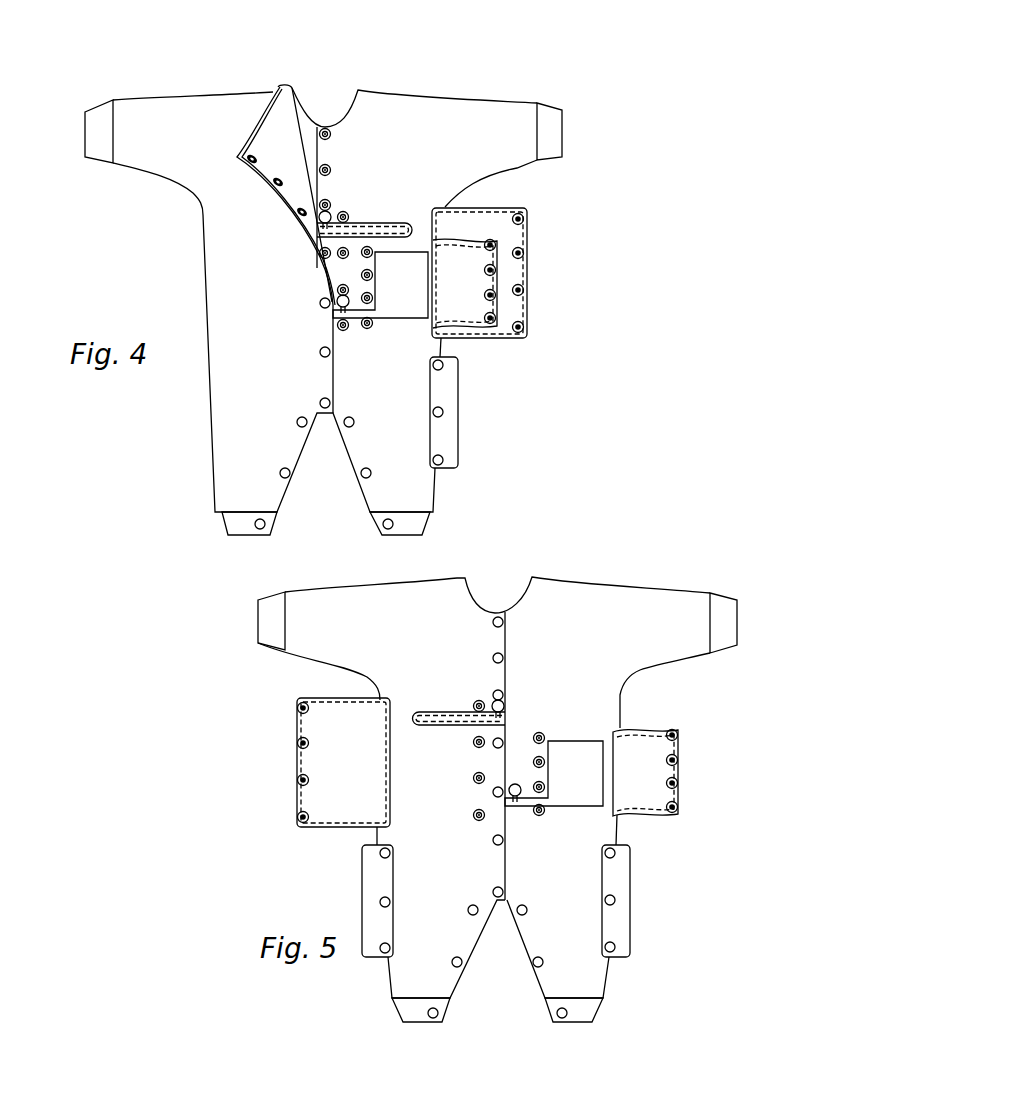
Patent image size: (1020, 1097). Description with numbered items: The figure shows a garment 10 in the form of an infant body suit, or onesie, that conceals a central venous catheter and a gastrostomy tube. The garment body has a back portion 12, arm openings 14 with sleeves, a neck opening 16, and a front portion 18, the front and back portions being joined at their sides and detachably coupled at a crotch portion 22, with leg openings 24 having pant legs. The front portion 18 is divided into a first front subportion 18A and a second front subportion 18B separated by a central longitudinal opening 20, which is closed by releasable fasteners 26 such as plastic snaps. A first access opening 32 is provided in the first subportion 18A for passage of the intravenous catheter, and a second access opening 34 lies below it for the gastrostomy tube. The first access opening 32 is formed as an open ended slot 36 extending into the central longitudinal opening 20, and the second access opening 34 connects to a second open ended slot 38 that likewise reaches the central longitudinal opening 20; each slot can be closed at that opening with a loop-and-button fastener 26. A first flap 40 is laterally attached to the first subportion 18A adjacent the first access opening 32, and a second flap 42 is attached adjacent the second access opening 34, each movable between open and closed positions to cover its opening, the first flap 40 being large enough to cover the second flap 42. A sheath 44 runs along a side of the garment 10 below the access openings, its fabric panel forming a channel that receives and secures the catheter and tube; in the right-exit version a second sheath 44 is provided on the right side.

In FIG. 4, the garment 10 is at (536, 52).
In FIG. 5, the garment 10 is at (712, 542).
In FIG. 4, the back portion 12 is at (293, 124).
In FIG. 4, the arm openings 14 is at (85, 127).
In FIG. 5, the arm openings 14 is at (258, 620).
In FIG. 5, the neck opening 16 is at (474, 594).
In FIG. 4, the front portion 18 is at (203, 250).
In FIG. 5, the front portion 18 is at (620, 710).
In FIG. 4, the first front subportion 18A is at (380, 157).
In FIG. 5, the first front subportion 18A is at (552, 648).
In FIG. 4, the second front subportion 18B is at (230, 352).
In FIG. 5, the second front subportion 18B is at (407, 833).
In FIG. 4, the central longitudinal opening 20 is at (333, 375).
In FIG. 5, the central longitudinal opening 20 is at (505, 860).
In FIG. 4, the crotch portion 22 is at (327, 416).
In FIG. 5, the crotch portion 22 is at (496, 905).
In FIG. 4, the leg openings 24 is at (258, 537).
In FIG. 5, the leg openings 24 is at (418, 1025).
In FIG. 4, the releasable fasteners 26 is at (331, 211).
In FIG. 5, the releasable fasteners 26 is at (490, 652).
In FIG. 4, the first access opening 32 is at (372, 227).
In FIG. 5, the first access opening 32 is at (458, 717).
In FIG. 4, the second access opening 34 is at (396, 295).
In FIG. 5, the second access opening 34 is at (578, 790).
In FIG. 4, the open ended slot 36 is at (317, 228).
In FIG. 5, the open ended slot 36 is at (507, 717).
In FIG. 4, the second open ended slot 38 is at (333, 315).
In FIG. 5, the second open ended slot 38 is at (505, 803).
In FIG. 4, the first flap 40 is at (527, 275).
In FIG. 5, the first flap 40 is at (297, 762).
In FIG. 4, the second flap 42 is at (473, 242).
In FIG. 5, the second flap 42 is at (680, 770).
In FIG. 4, the sheath 44 is at (458, 400).
In FIG. 5, the sheath 44 is at (362, 882).